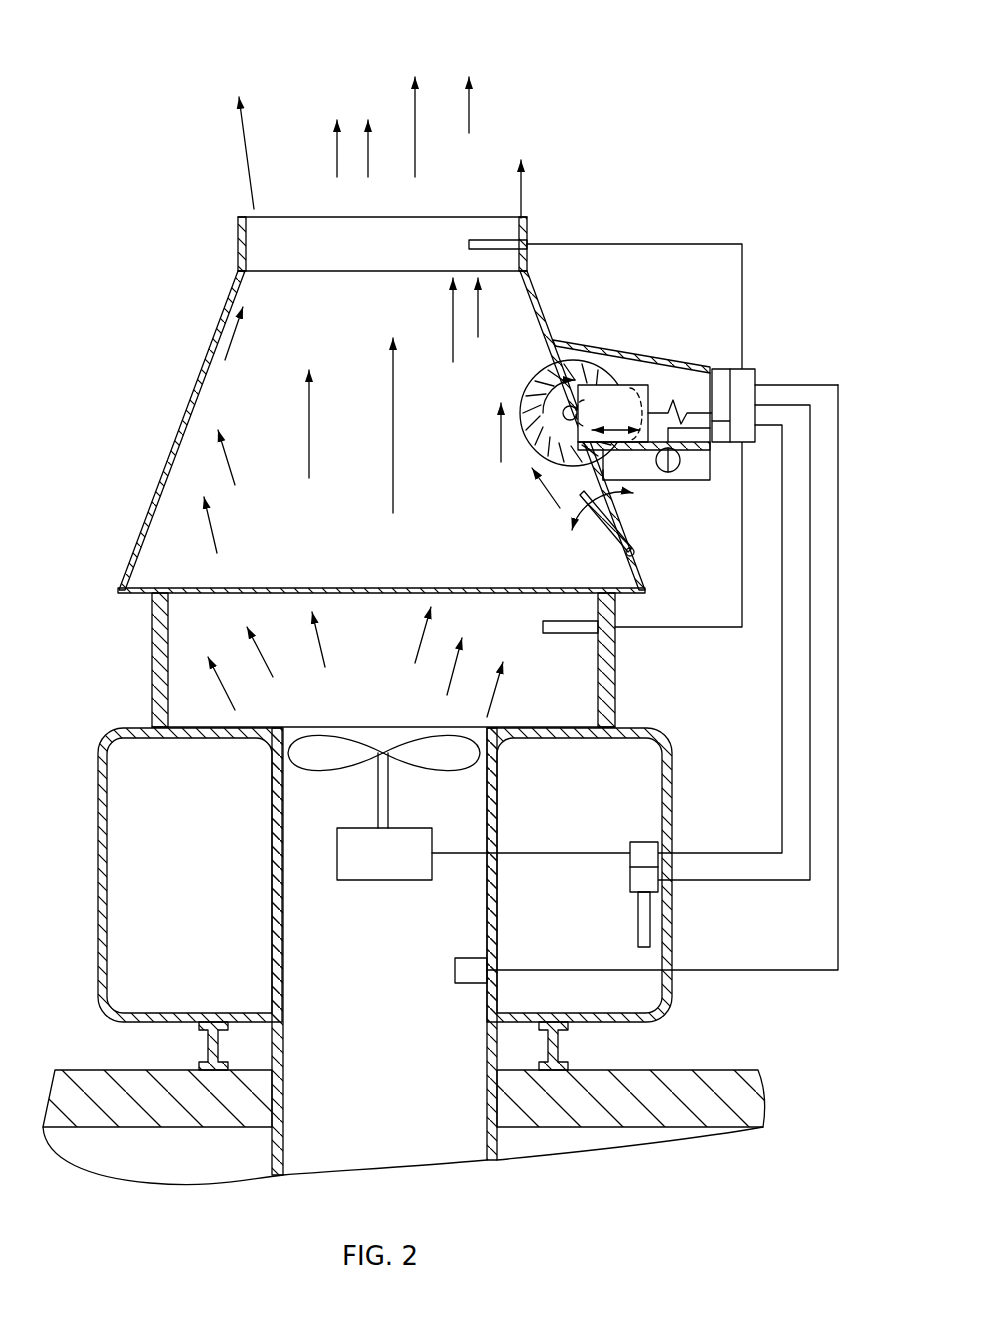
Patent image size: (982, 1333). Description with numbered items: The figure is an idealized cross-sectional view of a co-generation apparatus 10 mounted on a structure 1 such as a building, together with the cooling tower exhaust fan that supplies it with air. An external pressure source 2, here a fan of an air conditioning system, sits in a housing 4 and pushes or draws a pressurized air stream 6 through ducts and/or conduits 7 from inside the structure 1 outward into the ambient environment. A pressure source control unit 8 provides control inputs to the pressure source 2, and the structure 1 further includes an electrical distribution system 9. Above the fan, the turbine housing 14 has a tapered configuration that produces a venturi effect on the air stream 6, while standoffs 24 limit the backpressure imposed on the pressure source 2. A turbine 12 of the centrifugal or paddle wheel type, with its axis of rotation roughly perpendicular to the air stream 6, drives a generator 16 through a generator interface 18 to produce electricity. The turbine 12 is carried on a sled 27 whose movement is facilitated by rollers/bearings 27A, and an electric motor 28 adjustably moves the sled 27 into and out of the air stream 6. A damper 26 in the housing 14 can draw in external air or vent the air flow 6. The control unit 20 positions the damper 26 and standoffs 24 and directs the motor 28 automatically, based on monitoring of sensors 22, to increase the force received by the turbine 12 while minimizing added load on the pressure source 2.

The co-generation apparatus 10 is at (158, 108).
The air stream 6 is at (248, 155).
The turbine housing 14 is at (198, 313).
The sensors 22 is at (480, 218).
The turbine 12 is at (602, 364).
The generator interface 18 is at (723, 369).
The control unit 20 is at (758, 368).
The generator 16 is at (652, 402).
The electric motor 28 is at (718, 450).
The sled 27 is at (636, 475).
The rollers/bearings 27A is at (688, 487).
The damper 26 is at (640, 552).
The standoff 24 is at (615, 660).
The housing 4 is at (672, 818).
The pressure source control unit 8 is at (642, 842).
The electrical distribution system 9 is at (628, 893).
The pressure source 2 is at (459, 807).
The ducts and/or conduits 7 is at (483, 1128).
The structure 1 is at (404, 1103).